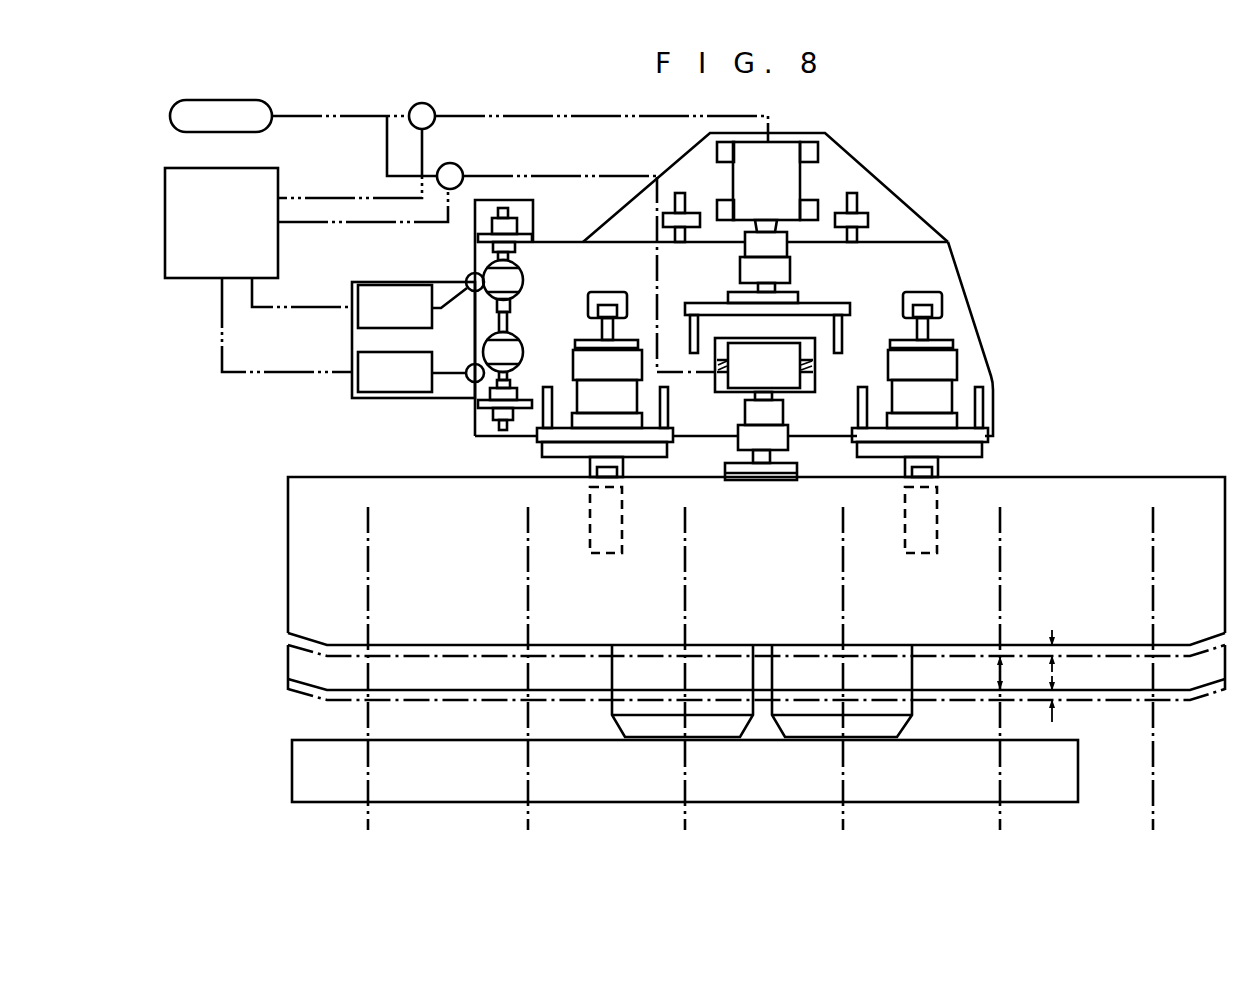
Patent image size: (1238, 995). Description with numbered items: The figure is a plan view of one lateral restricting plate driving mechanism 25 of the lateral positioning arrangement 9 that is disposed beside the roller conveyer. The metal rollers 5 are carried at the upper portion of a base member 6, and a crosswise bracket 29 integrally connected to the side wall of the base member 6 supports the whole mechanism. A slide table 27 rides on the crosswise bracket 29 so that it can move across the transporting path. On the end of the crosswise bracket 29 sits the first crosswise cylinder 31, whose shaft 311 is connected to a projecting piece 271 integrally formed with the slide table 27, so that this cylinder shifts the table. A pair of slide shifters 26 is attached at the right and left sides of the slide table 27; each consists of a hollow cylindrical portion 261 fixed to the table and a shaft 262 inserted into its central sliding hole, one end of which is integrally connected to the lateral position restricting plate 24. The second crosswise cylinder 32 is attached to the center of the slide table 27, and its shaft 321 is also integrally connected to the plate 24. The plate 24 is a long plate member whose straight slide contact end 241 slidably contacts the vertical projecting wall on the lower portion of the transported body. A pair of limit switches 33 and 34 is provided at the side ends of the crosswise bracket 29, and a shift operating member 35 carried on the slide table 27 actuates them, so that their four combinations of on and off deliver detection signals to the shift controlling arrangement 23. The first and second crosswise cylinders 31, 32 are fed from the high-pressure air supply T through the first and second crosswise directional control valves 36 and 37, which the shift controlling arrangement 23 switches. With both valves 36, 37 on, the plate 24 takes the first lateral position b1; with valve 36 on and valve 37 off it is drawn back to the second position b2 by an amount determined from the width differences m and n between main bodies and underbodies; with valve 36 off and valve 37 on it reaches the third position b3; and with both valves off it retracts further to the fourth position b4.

The high-pressure air supply T is at (271, 110).
The shift controlling arrangement 23 is at (273, 180).
The first crosswise directional control valve 36 is at (432, 111).
The second crosswise directional control valve 37 is at (460, 170).
The limit switch 33 is at (387, 298).
The limit switch 34 is at (373, 357).
The shift operating member 35 is at (505, 317).
The lateral positioning arrangement 9 is at (1119, 194).
The lateral restricting plate driving mechanism 25 is at (997, 209).
The crosswise bracket 29 is at (900, 212).
The slide table 27 is at (942, 259).
The slide shifter 26 is at (634, 338).
The hollow cylindrical portion 261 is at (580, 363).
The shaft 262 is at (590, 467).
The first crosswise cylinder 31 is at (793, 181).
The shaft 311 is at (768, 226).
The projecting piece 271 is at (710, 304).
The second crosswise cylinder 32 is at (790, 377).
The shaft 321 is at (768, 456).
The lateral position restricting plate 24 is at (288, 531).
The straight slide contact end 241 is at (485, 648).
The first lateral position b1 is at (450, 702).
The second crosswise position b2 is at (470, 692).
The third crosswise position b3 is at (595, 657).
The fourth crosswise position b4 is at (630, 652).
The metal roller 5 is at (727, 708).
The base member 6 is at (1078, 742).
The width difference amount n is at (1063, 650).
The width difference amount m is at (1057, 697).